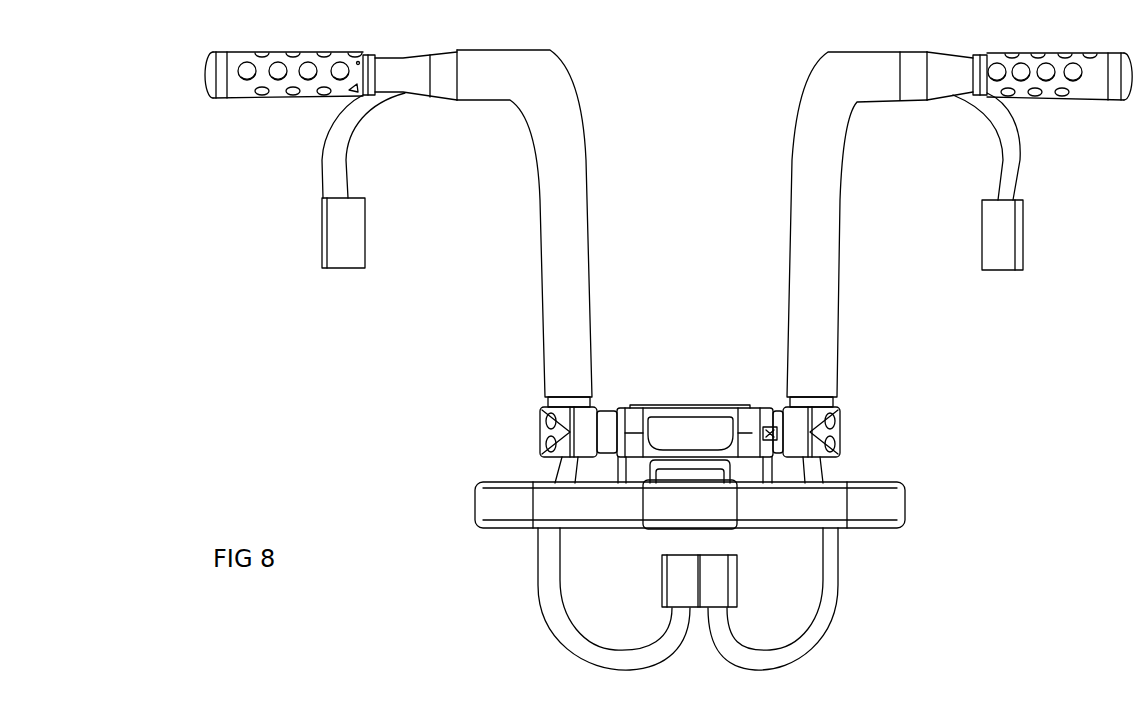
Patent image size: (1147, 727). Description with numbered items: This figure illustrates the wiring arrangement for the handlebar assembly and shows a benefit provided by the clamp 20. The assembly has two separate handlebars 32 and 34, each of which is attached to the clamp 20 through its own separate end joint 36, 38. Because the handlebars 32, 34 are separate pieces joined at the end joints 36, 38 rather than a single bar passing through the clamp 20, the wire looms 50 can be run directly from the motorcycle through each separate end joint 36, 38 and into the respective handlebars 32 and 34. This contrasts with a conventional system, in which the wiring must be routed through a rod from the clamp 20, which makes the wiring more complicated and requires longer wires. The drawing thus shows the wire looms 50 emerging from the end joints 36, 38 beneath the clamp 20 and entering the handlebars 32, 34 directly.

The clamp 20 is at (685, 405).
The handlebar 32 is at (959, 254).
The handlebar 34 is at (398, 229).
The end joint 36 is at (840, 437).
The end joint 38 is at (540, 437).
The wire loom 50 is at (689, 599).